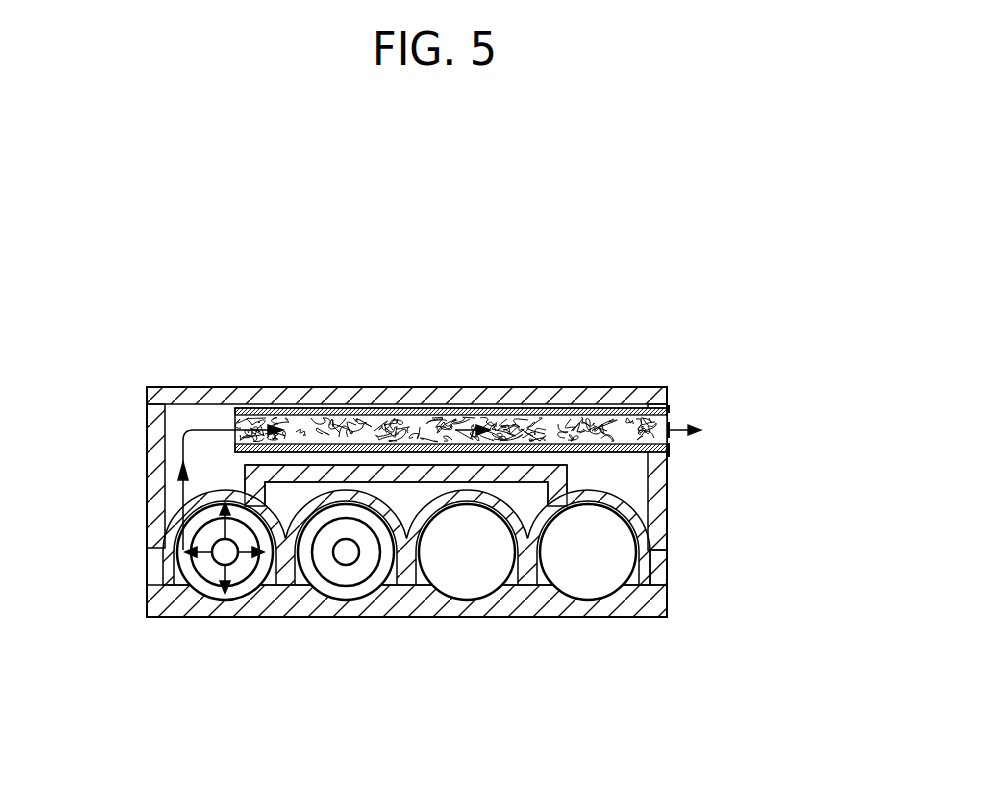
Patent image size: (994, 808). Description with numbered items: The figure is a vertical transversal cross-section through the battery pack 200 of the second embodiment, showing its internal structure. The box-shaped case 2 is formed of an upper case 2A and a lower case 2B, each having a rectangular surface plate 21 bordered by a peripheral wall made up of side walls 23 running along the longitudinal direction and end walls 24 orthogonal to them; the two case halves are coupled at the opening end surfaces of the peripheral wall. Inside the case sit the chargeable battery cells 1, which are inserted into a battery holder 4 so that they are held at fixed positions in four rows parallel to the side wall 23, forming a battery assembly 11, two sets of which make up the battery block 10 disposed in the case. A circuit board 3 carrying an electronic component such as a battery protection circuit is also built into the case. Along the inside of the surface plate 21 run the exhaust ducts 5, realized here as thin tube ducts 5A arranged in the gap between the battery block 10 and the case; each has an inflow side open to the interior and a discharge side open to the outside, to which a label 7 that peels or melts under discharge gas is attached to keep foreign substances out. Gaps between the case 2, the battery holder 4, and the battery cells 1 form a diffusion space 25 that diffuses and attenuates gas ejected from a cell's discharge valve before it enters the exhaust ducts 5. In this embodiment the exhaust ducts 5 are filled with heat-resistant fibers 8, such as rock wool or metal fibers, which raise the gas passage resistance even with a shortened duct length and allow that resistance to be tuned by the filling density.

The battery pack 200 is at (667, 240).
The case 2 is at (458, 504).
The upper case 2A is at (663, 285).
The lower case 2B is at (663, 717).
The surface plate 21 is at (361, 393).
The side wall 23 is at (148, 444).
The end wall 24 is at (201, 417).
The diffusion space 25 is at (175, 466).
The circuit board 3 is at (395, 473).
The battery holder 4 is at (628, 506).
The battery cell 1 is at (213, 570).
The exhaust duct 5 is at (452, 377).
The thin tube duct 5A is at (452, 377).
The heat-resistant fibers 8 is at (471, 413).
The label 7 is at (668, 423).
The battery assembly 11 is at (615, 489).
The battery block 10 is at (691, 504).